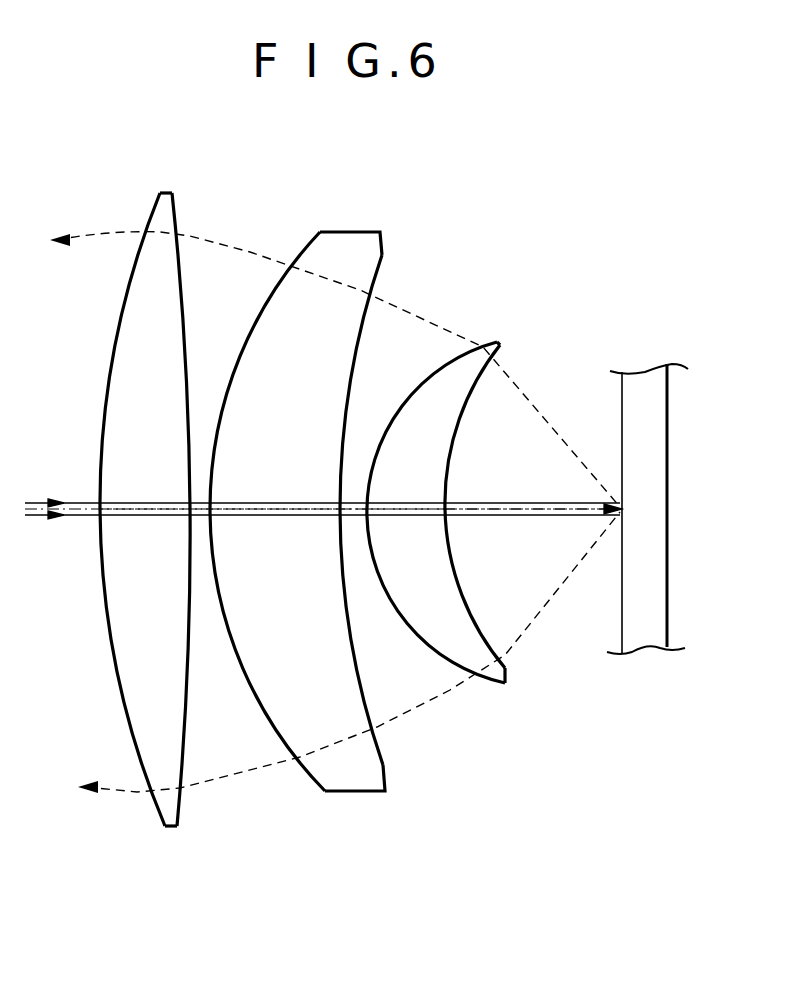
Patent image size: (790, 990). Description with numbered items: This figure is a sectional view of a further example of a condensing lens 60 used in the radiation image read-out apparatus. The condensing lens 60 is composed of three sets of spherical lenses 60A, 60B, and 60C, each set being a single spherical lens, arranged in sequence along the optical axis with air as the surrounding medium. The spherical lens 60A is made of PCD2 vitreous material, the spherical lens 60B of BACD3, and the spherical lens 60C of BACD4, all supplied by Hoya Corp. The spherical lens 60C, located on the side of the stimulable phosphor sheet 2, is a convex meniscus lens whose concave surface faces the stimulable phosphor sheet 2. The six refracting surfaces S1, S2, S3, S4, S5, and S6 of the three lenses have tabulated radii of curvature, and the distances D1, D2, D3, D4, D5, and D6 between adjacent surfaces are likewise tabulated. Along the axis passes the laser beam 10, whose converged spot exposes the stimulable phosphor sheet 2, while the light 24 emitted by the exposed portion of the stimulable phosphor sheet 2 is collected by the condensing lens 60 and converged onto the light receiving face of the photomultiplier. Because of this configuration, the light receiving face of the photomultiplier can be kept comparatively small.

The stimulable phosphor sheet 2 is at (652, 465).
The laser beam 10 is at (46, 518).
The light 24 is at (97, 238).
The condensing lens 60 is at (328, 197).
The spherical lens 60A is at (182, 515).
The spherical lens 60B is at (334, 513).
The spherical lens 60C is at (478, 507).
The distance between adjacent surfaces D1 is at (143, 502).
The distance between adjacent surfaces D2 is at (198, 502).
The distance between adjacent surfaces D3 is at (266, 502).
The distance between adjacent surfaces D4 is at (348, 502).
The distance between adjacent surfaces D5 is at (403, 502).
The distance between adjacent surfaces D6 is at (505, 502).
The surface S1 is at (160, 806).
The surface S2 is at (182, 806).
The surface S3 is at (322, 780).
The surface S4 is at (384, 744).
The surface S5 is at (452, 664).
The surface S6 is at (498, 632).